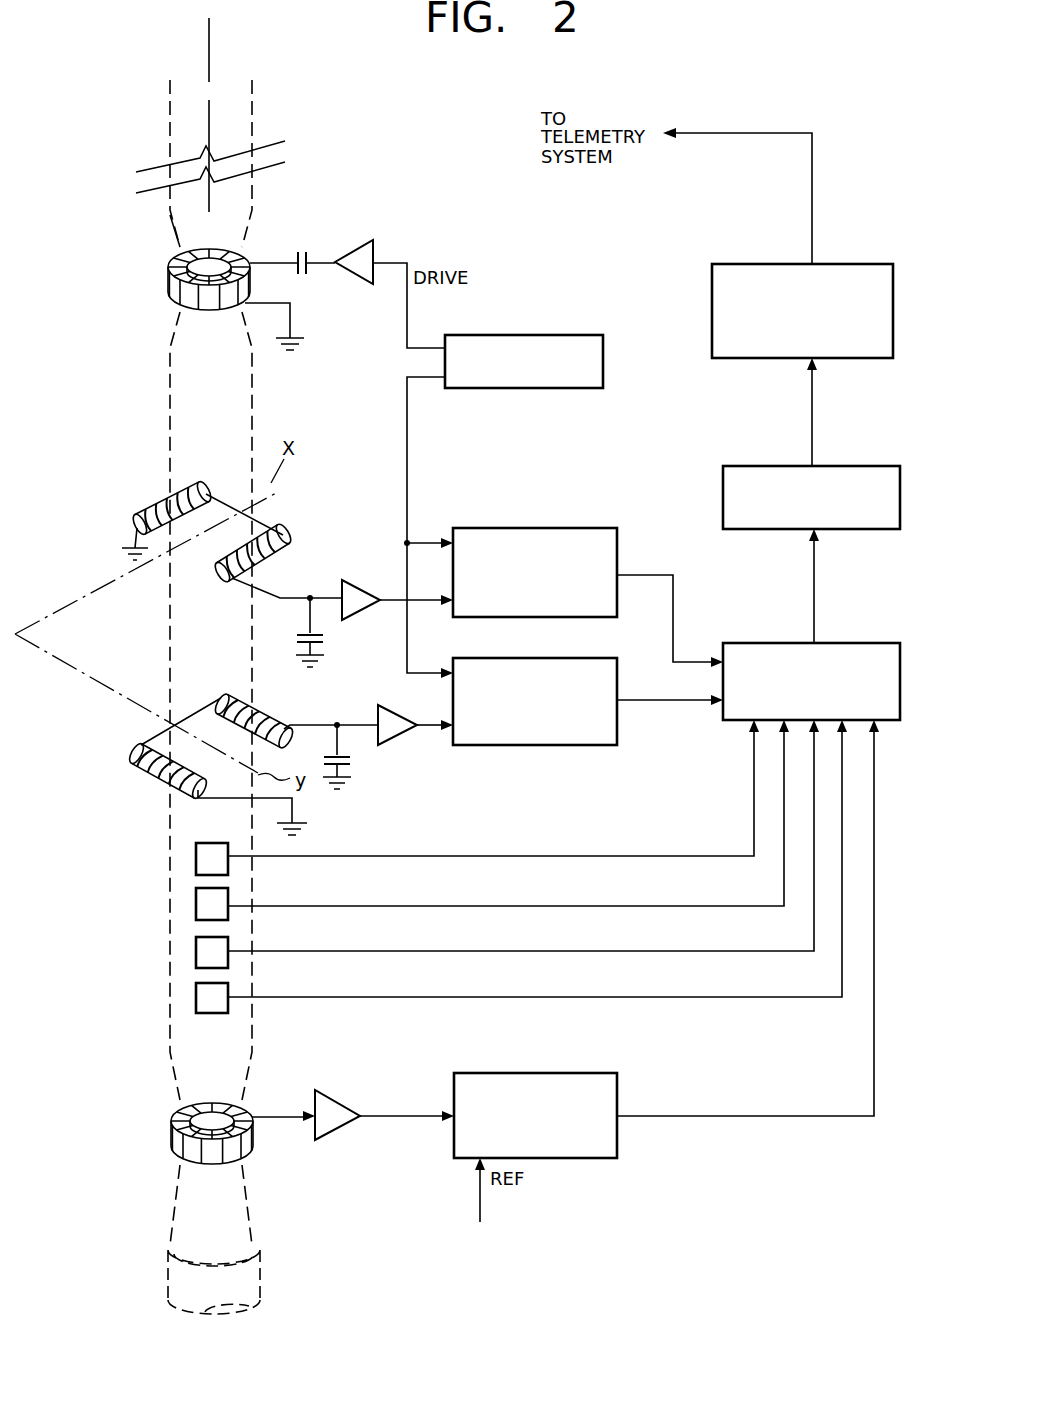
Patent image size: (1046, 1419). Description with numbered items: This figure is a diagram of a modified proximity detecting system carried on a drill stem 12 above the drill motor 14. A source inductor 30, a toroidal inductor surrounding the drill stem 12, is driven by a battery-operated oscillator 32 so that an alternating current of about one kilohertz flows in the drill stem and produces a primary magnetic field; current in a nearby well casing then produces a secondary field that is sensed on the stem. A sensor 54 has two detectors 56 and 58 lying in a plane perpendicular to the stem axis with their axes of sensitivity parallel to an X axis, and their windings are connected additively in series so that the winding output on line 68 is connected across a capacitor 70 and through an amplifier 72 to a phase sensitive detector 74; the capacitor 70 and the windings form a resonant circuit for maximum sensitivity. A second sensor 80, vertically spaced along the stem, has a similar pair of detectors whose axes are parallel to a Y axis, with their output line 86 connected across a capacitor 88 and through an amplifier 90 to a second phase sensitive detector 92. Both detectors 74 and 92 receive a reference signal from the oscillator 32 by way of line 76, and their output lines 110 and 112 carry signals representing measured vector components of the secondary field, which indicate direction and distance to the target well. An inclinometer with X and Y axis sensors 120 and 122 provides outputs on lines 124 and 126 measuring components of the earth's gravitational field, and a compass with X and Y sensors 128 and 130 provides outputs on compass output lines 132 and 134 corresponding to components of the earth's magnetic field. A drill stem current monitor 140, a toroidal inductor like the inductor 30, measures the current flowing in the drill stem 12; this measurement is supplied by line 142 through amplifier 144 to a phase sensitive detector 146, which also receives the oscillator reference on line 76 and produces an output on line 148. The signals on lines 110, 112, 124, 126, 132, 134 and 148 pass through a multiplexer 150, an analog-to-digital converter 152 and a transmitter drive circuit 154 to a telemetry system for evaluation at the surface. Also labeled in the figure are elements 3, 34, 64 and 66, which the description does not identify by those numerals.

The drill string / pipe 3 is at (212, 88).
The drill stem 12 is at (250, 203).
The Y axis inclinometer sensor 122 is at (168, 227).
The source inductor 30 is at (155, 287).
The drive amplifier 34 is at (347, 273).
The oscillator 32 is at (495, 335).
The reference line 76 is at (408, 497).
The sensor 54 is at (136, 496).
The detector 56 is at (122, 531).
The coil core 64 is at (172, 490).
The detector 58 is at (306, 530).
The coil interconnection 66 is at (253, 522).
The winding output line 68 is at (297, 598).
The capacitor 70 is at (330, 640).
The amplifier 72 is at (352, 578).
The phase sensitive detector 74 is at (523, 528).
The output line 86 is at (292, 725).
The second sensor 80 is at (134, 787).
The capacitor 88 is at (352, 755).
The amplifier 90 is at (396, 707).
The second phase sensitive detector 92 is at (543, 746).
The output line 110 is at (674, 612).
The output line 112 is at (643, 702).
The multiplexer 150 is at (833, 643).
The analog-to-digital converter 152 is at (836, 466).
The transmitter drive circuit 154 is at (833, 263).
The X axis inclinometer sensor 120 is at (196, 856).
The compass X sensor 128 is at (196, 951).
The compass Y sensor 130 is at (196, 997).
The inclinometer output line 124 is at (598, 856).
The inclinometer output line 126 is at (598, 906).
The compass output line 132 is at (598, 951).
The compass output line 134 is at (598, 997).
The drill stem current monitor 140 is at (162, 1143).
The line 142 is at (280, 1120).
The amplifier 144 is at (333, 1097).
The phase sensitive detector 146 is at (617, 1152).
The output line 148 is at (643, 1114).
The drill motor 14 is at (168, 1284).